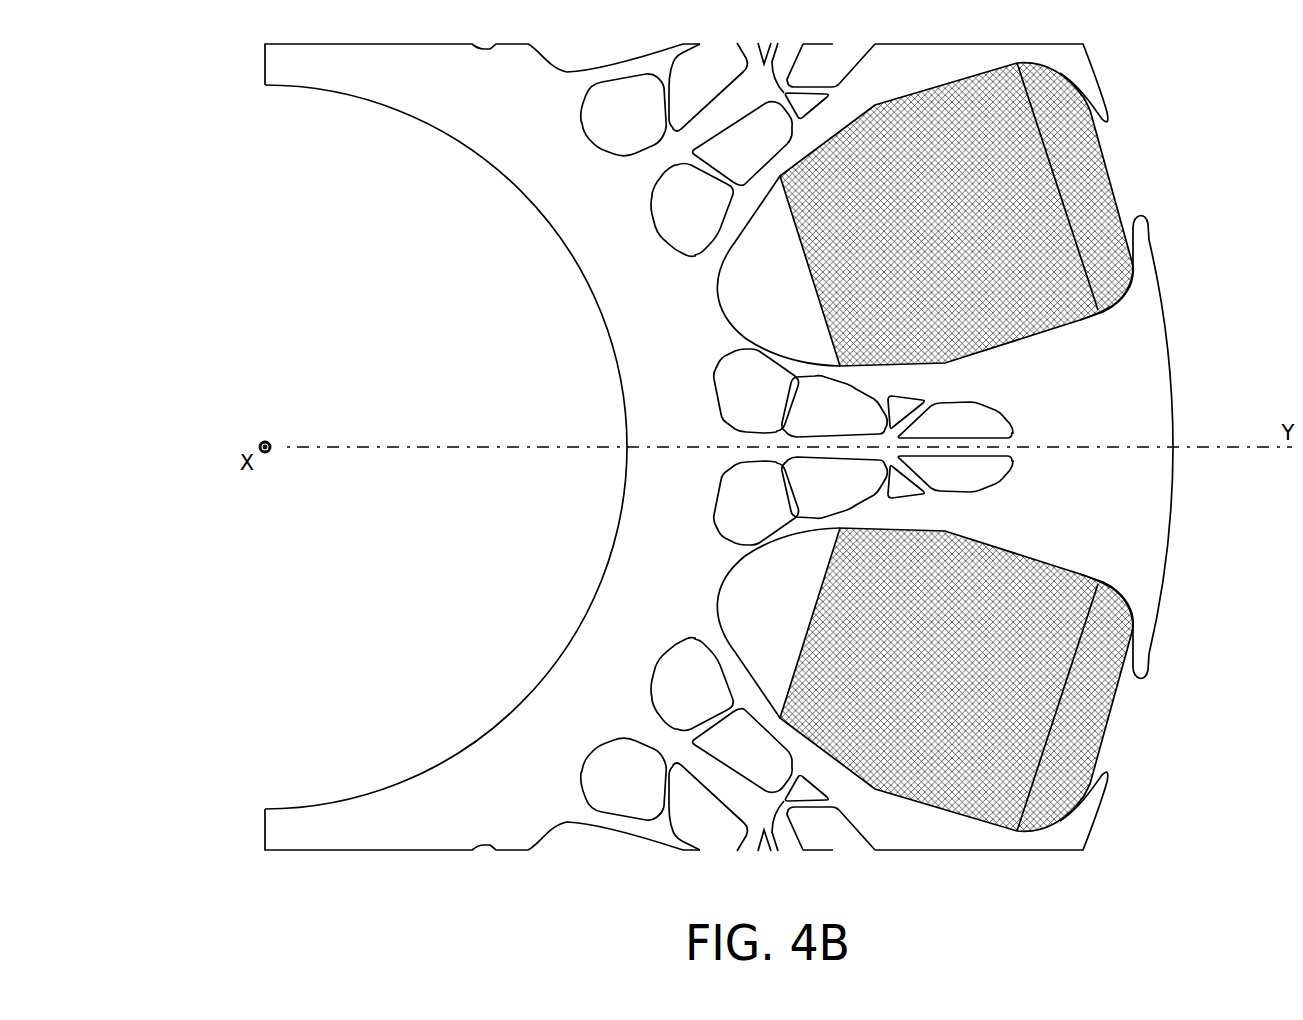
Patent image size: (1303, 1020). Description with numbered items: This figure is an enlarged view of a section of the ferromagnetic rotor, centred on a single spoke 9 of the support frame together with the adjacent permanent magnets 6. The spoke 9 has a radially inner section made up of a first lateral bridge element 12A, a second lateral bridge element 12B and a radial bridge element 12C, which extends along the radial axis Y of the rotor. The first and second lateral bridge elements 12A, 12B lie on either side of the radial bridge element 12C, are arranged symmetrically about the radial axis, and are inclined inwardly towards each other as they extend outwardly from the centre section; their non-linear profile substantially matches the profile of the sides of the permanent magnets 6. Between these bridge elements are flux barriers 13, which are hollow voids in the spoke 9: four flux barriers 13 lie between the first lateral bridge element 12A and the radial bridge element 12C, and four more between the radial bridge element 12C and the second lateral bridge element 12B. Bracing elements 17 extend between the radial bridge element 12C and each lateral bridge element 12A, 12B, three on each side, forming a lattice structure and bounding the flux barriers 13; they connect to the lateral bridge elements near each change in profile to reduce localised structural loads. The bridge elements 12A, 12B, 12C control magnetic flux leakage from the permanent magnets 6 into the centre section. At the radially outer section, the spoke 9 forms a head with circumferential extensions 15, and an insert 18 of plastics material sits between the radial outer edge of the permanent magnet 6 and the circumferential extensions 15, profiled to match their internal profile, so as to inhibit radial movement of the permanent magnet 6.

The permanent magnet 6 is at (975, 206).
The insert 18 is at (1101, 203).
The circumferential extension 15 is at (1135, 643).
The spoke 9 is at (1136, 391).
The first lateral bridge element 12A is at (768, 347).
The second lateral bridge element 12B is at (767, 547).
The radial bridge element 12C is at (768, 441).
The flux barrier 13 is at (760, 488).
The bracing element 17 is at (793, 505).